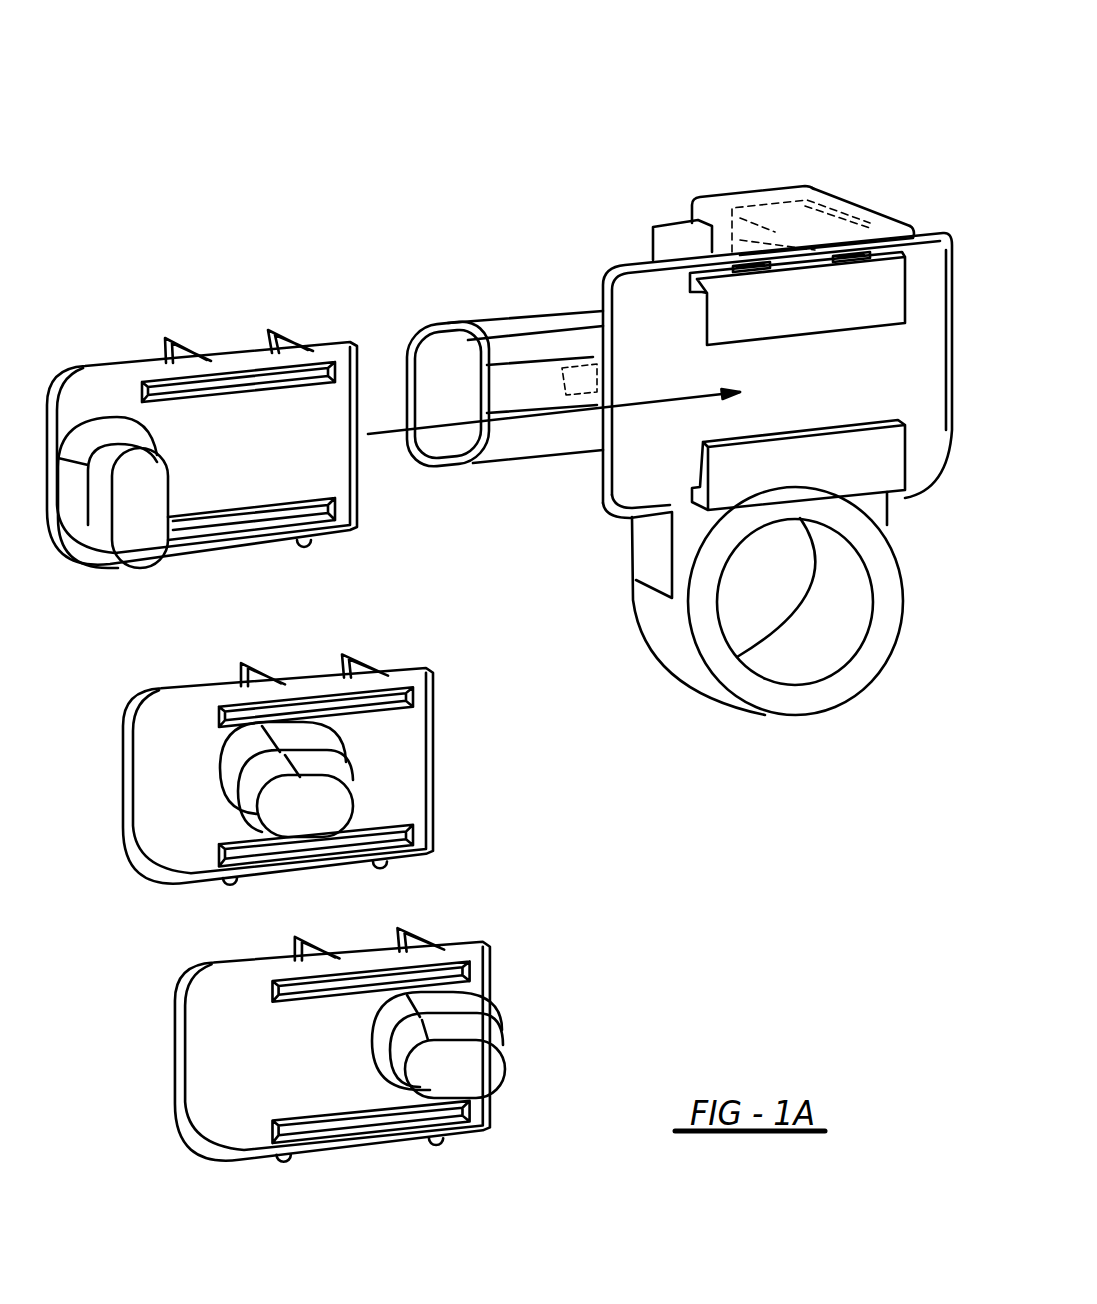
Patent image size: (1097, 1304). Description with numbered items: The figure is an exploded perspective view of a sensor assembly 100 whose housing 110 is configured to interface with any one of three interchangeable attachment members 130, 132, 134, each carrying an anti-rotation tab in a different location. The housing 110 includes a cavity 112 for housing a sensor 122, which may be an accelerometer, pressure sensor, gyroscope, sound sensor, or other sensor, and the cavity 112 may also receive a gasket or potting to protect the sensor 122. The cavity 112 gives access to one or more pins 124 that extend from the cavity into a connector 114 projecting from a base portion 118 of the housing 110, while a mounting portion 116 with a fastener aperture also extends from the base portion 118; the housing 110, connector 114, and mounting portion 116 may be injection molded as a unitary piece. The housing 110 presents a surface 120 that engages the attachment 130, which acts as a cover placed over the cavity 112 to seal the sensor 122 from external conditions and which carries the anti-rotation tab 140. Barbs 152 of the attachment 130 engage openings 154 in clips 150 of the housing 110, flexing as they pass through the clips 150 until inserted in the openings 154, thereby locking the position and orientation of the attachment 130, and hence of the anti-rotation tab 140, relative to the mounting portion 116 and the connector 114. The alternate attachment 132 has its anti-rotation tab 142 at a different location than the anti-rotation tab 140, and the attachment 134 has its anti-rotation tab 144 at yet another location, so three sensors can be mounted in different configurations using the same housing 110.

The sensor assembly 100 is at (310, 112).
The housing 110 is at (807, 213).
The cavity 112 is at (828, 217).
The connector 114 is at (465, 320).
The mounting portion 116 is at (828, 632).
The base portion 118 is at (858, 212).
The surface 120 is at (638, 292).
The sensor 122 is at (710, 252).
The pins 124 is at (577, 380).
The interchangeable attachment member 130 is at (98, 395).
The attachment 132 is at (400, 768).
The attachment 134 is at (207, 1066).
The anti-rotation tab 140 is at (128, 527).
The anti-rotation tab 142 is at (293, 800).
The anti-rotation tab 144 is at (477, 1058).
The clips 150 is at (882, 292).
The barbs 152 is at (285, 352).
The openings 154 is at (853, 262).